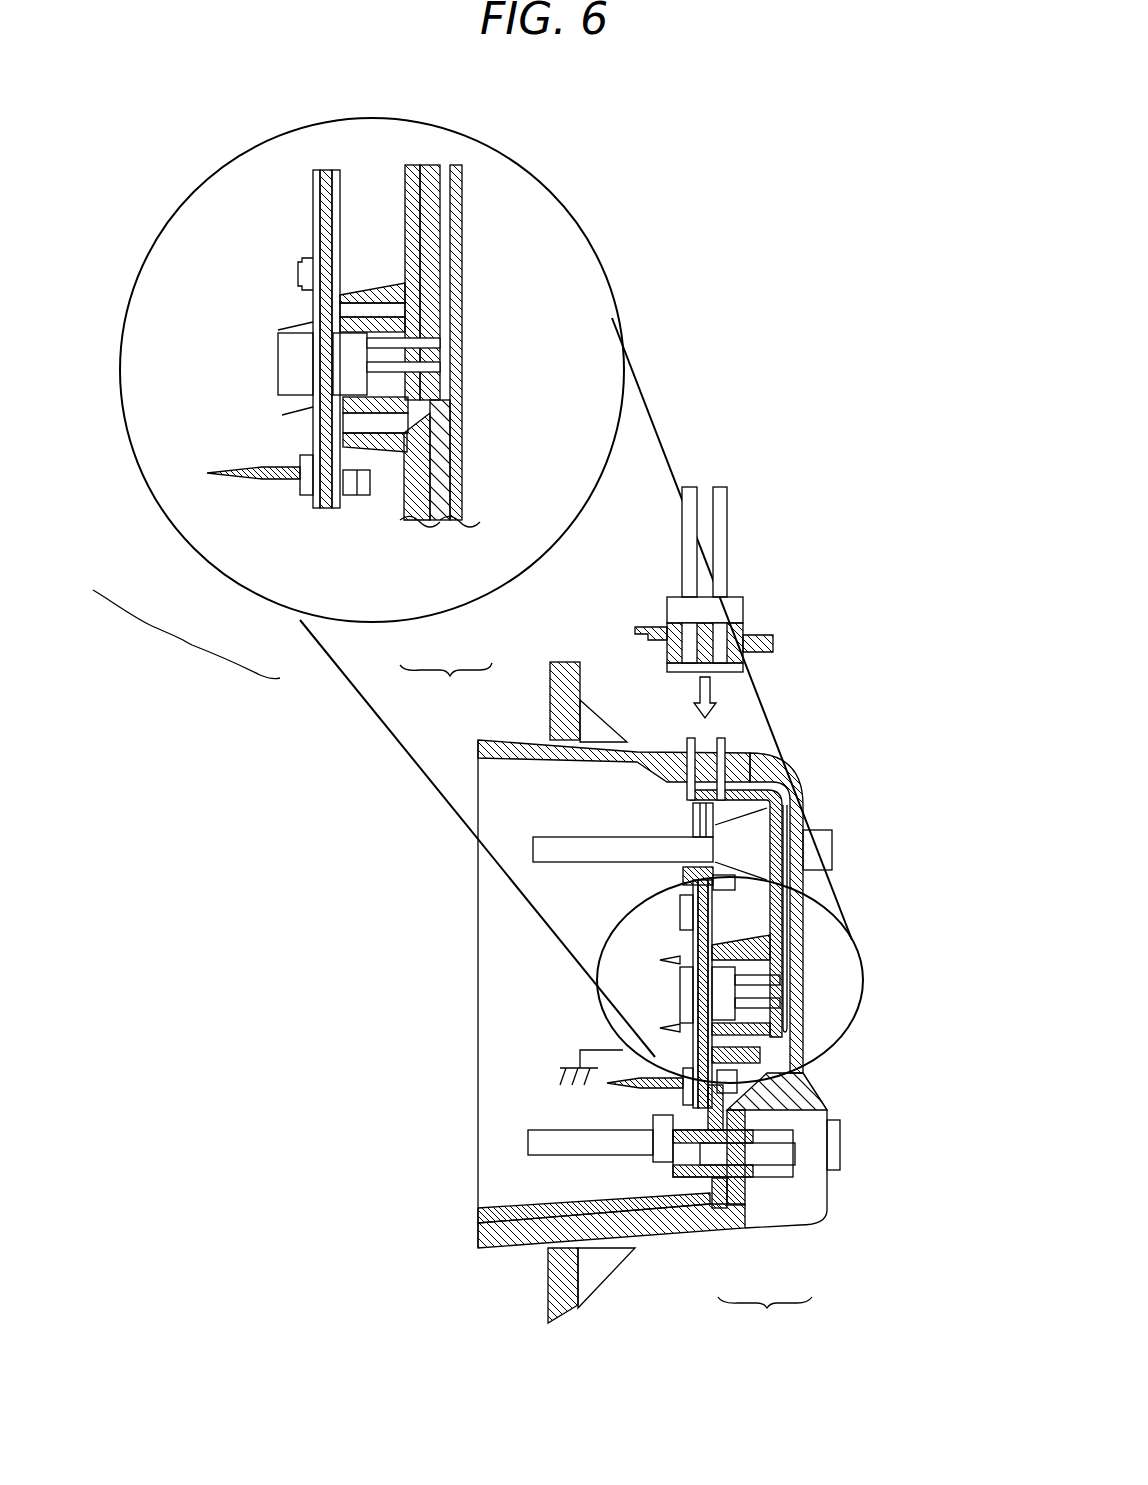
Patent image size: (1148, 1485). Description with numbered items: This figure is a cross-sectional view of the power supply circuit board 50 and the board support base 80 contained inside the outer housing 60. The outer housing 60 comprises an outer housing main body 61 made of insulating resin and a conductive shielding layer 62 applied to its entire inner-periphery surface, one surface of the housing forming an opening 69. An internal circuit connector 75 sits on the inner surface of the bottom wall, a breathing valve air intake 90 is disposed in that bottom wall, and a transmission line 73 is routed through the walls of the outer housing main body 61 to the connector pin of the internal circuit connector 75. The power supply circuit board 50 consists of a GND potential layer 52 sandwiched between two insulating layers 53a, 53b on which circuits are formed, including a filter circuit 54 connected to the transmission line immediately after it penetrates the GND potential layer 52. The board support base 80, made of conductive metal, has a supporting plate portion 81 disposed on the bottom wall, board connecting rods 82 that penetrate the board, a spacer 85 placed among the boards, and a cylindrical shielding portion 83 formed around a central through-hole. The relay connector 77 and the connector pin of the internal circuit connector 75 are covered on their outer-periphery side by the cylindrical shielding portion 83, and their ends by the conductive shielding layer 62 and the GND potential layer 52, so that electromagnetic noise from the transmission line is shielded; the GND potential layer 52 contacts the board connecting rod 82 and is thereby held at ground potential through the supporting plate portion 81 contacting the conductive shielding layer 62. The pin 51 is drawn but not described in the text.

The power supply circuit board 50 is at (690, 1095).
The terminal pin 51 is at (303, 490).
The GND potential layer 52 is at (318, 508).
The insulating layer 53a is at (310, 508).
The insulating layer 53b is at (328, 508).
The filter circuit 54 is at (283, 345).
The outer housing 60 is at (606, 1002).
The outer housing main body 61 is at (455, 525).
The conductive shielding layer 62 is at (420, 525).
The opening 69 is at (520, 1205).
The transmission line 73 is at (443, 323).
The internal circuit connector 75 is at (363, 307).
The relay connector 77 is at (350, 343).
The board support base 80 is at (405, 505).
The supporting plate portion 81 is at (412, 167).
The board connecting rod 82 is at (560, 837).
The cylindrical shielding portion 83 is at (392, 287).
The spacer 85 is at (758, 635).
The breathing valve air intake 90 is at (770, 1197).